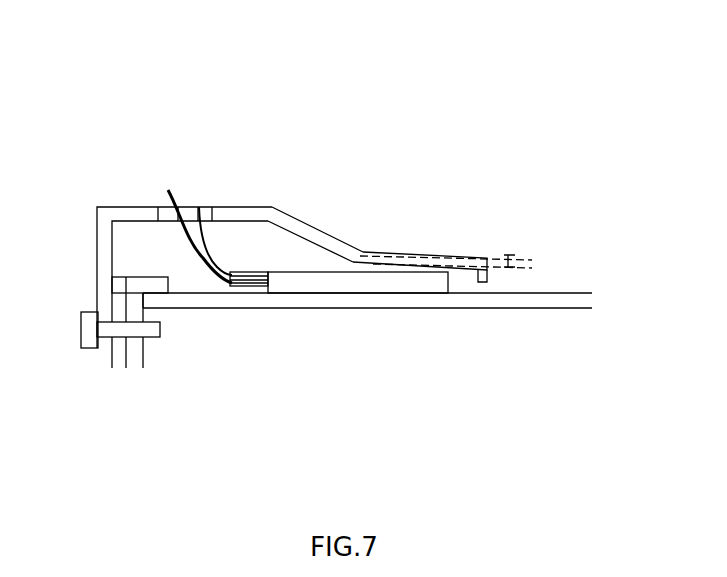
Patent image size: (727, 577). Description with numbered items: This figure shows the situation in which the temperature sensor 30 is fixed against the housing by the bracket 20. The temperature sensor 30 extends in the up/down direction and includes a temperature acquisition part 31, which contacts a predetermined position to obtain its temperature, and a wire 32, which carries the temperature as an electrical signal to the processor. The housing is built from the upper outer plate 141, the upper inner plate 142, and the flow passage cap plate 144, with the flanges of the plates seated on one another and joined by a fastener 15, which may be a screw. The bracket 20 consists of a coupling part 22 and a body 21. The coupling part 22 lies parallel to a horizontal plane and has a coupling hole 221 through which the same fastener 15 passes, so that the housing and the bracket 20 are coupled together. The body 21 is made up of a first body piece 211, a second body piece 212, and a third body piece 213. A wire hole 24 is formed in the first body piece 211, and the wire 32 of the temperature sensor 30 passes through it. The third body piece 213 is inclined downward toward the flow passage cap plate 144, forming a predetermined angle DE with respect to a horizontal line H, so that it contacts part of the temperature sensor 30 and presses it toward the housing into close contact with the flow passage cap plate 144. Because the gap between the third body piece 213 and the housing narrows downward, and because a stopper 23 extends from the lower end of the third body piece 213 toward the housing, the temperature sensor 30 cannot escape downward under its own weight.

The bracket 20 is at (446, 170).
The body 21 is at (402, 93).
The first body piece 211 is at (245, 207).
The second body piece 212 is at (318, 229).
The third body piece 213 is at (401, 252).
The coupling part 22 is at (97, 250).
The coupling hole 221 is at (108, 348).
The stopper 23 is at (488, 277).
The wire hole 24 is at (167, 200).
The temperature sensor 30 is at (378, 295).
The temperature acquisition part 31 is at (293, 283).
The wire 32 is at (199, 207).
The upper outer plate 141 is at (125, 276).
The upper inner plate 142 is at (157, 276).
The flow passage cap plate 144 is at (215, 308).
The fastener 15 is at (81, 328).
The horizontal line H is at (510, 254).
The angle DE is at (516, 262).